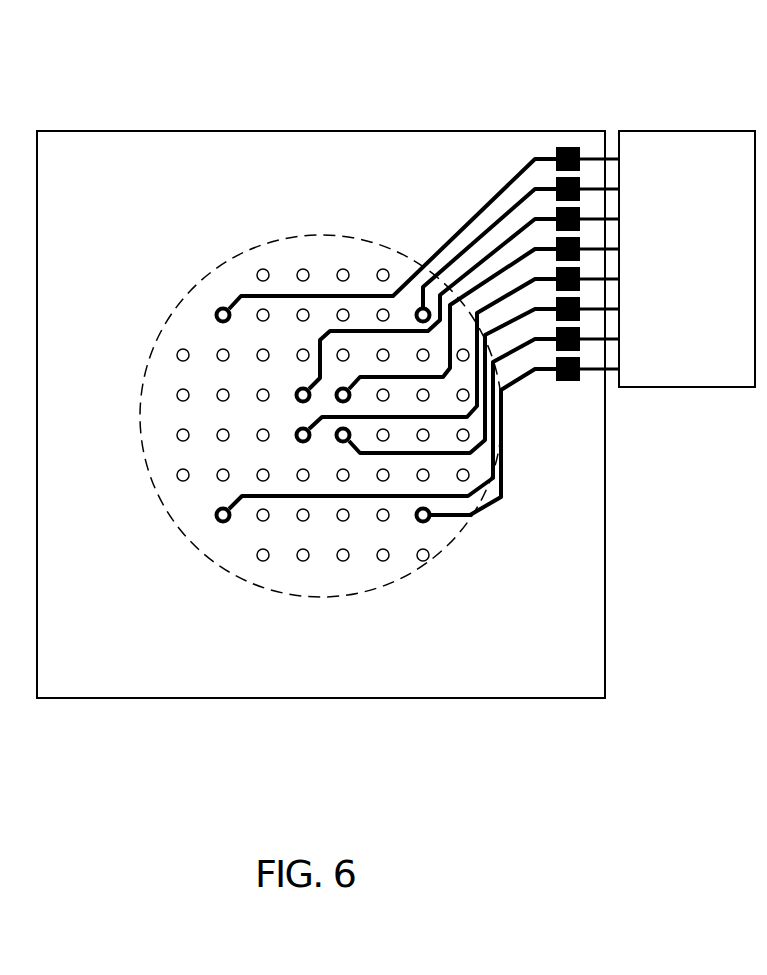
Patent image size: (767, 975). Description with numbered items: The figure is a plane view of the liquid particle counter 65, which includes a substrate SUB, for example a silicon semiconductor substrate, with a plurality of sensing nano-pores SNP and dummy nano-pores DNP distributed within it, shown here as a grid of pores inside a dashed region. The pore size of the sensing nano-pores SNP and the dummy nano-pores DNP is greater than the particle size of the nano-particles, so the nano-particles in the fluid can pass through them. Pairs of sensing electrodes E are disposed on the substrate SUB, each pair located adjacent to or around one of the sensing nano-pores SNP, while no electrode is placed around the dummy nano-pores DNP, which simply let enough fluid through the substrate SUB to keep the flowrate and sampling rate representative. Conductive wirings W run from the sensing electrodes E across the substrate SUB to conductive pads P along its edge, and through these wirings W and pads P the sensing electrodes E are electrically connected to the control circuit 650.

The liquid particle counter 65 is at (538, 65).
The sensing nano-pores SNP is at (216, 308).
The sensing electrodes E is at (226, 305).
The dummy nano-pores DNP is at (298, 270).
The substrate SUB is at (372, 150).
The conductive wirings W is at (493, 197).
The conductive pads P is at (563, 148).
The control circuit 650 is at (705, 273).